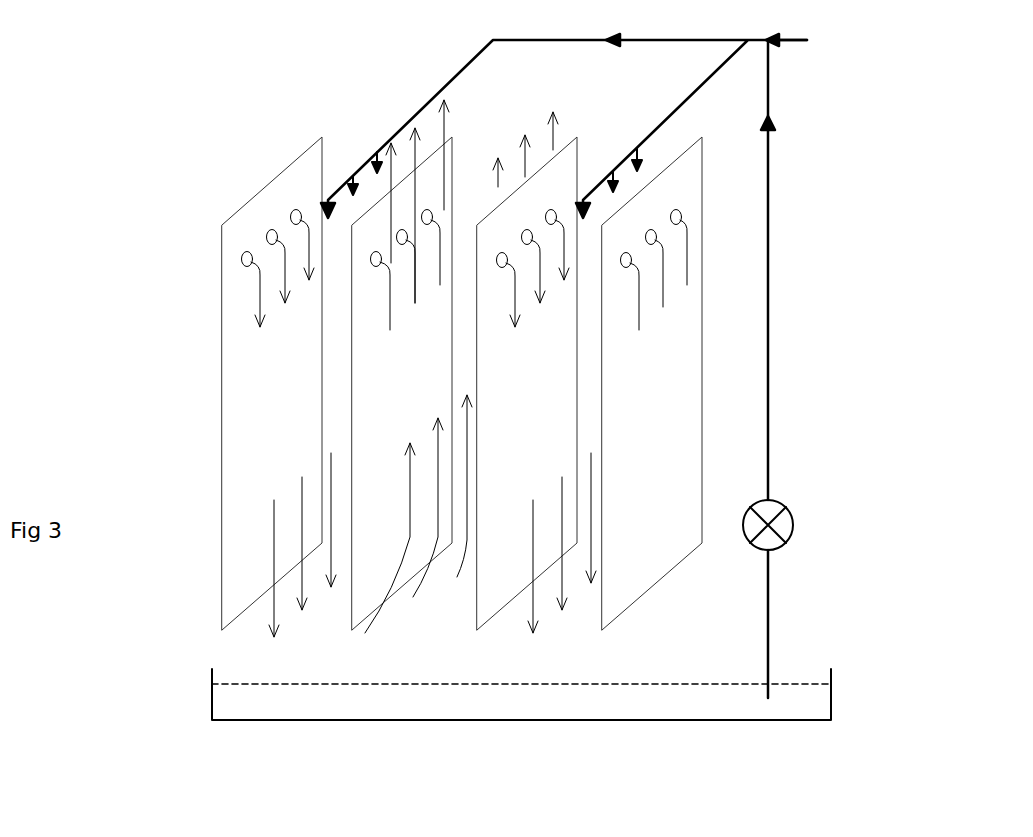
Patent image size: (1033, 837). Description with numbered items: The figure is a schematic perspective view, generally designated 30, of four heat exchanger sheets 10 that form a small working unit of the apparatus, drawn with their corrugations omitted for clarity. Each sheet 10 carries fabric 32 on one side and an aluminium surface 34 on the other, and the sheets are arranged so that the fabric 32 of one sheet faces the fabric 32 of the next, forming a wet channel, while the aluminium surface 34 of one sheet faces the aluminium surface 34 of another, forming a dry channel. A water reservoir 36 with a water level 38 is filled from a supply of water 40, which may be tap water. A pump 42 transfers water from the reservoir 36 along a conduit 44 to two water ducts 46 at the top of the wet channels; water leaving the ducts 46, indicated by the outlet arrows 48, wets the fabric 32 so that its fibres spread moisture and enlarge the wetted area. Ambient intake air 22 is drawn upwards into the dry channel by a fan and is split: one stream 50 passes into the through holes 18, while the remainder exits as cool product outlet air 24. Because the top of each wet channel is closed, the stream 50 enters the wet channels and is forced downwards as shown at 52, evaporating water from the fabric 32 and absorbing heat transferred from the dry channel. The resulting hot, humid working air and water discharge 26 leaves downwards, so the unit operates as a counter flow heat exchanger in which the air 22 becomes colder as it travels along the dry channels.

The four-sheet unit 30 is at (203, 86).
The heat exchanger sheet 10 is at (222, 425).
The through holes 18 is at (293, 213).
The ambient intake air 22 is at (430, 570).
The cool product outlet air 24 is at (526, 137).
The working air and water discharge 26 is at (274, 530).
The fabric 32 is at (398, 406).
The aluminium surface 34 is at (527, 380).
The water reservoir 36 is at (255, 705).
The water level 38 is at (255, 683).
The supply of water 40 is at (807, 40).
The pump 42 is at (793, 530).
The conduit 44 is at (768, 365).
The water duct 46 is at (412, 117).
The outlet arrow 48 is at (353, 180).
The stream 50 is at (390, 310).
The downward air flow in wet channel 52 is at (260, 292).